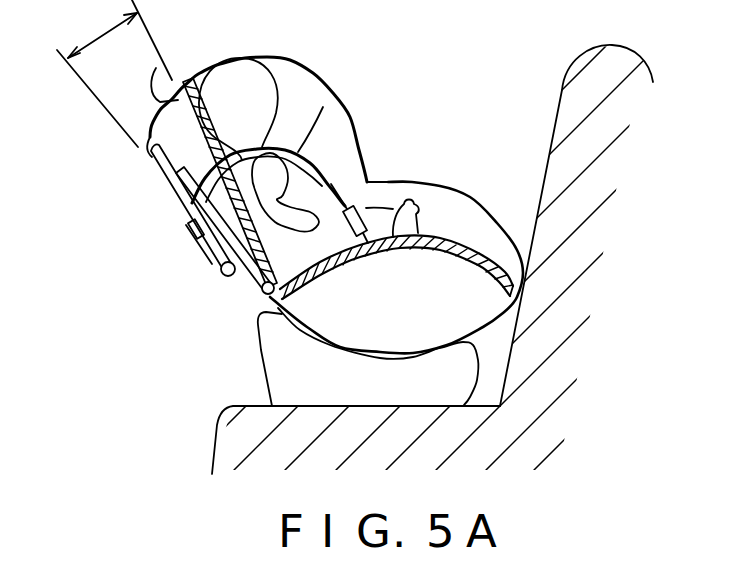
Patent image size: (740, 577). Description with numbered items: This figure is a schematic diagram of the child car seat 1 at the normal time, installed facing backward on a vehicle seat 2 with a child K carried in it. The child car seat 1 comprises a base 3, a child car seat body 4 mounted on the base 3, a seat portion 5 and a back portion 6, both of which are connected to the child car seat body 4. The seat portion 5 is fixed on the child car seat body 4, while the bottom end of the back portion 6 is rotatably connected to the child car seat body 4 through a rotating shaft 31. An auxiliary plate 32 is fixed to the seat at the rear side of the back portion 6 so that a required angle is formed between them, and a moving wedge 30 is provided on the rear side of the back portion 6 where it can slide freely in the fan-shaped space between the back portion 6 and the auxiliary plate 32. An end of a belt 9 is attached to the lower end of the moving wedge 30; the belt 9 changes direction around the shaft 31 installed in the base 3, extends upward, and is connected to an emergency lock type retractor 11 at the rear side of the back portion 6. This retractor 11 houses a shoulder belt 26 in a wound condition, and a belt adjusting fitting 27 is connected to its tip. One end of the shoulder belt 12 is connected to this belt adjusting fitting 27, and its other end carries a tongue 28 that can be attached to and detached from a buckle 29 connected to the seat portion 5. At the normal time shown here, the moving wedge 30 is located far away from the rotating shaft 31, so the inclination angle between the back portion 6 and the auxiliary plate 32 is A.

The child car seat 1 is at (483, 55).
The vehicle seat 2 is at (227, 428).
The base 3 is at (266, 363).
The child car seat body 4 is at (297, 84).
The seat portion 5 is at (465, 240).
The back portion 6 is at (156, 68).
The belt 9 is at (247, 281).
The emergency lock type retractor 11 is at (221, 272).
The shoulder belt 12 is at (323, 107).
The shoulder belt 26 is at (207, 248).
The belt adjusting fitting 27 is at (190, 230).
The tongue 28 is at (366, 208).
The buckle 29 is at (363, 163).
The moving wedge 30 is at (184, 184).
The rotating shaft 31 is at (282, 298).
The auxiliary plate 32 is at (158, 125).
The child K is at (248, 76).
The inclination angle A is at (114, 73).